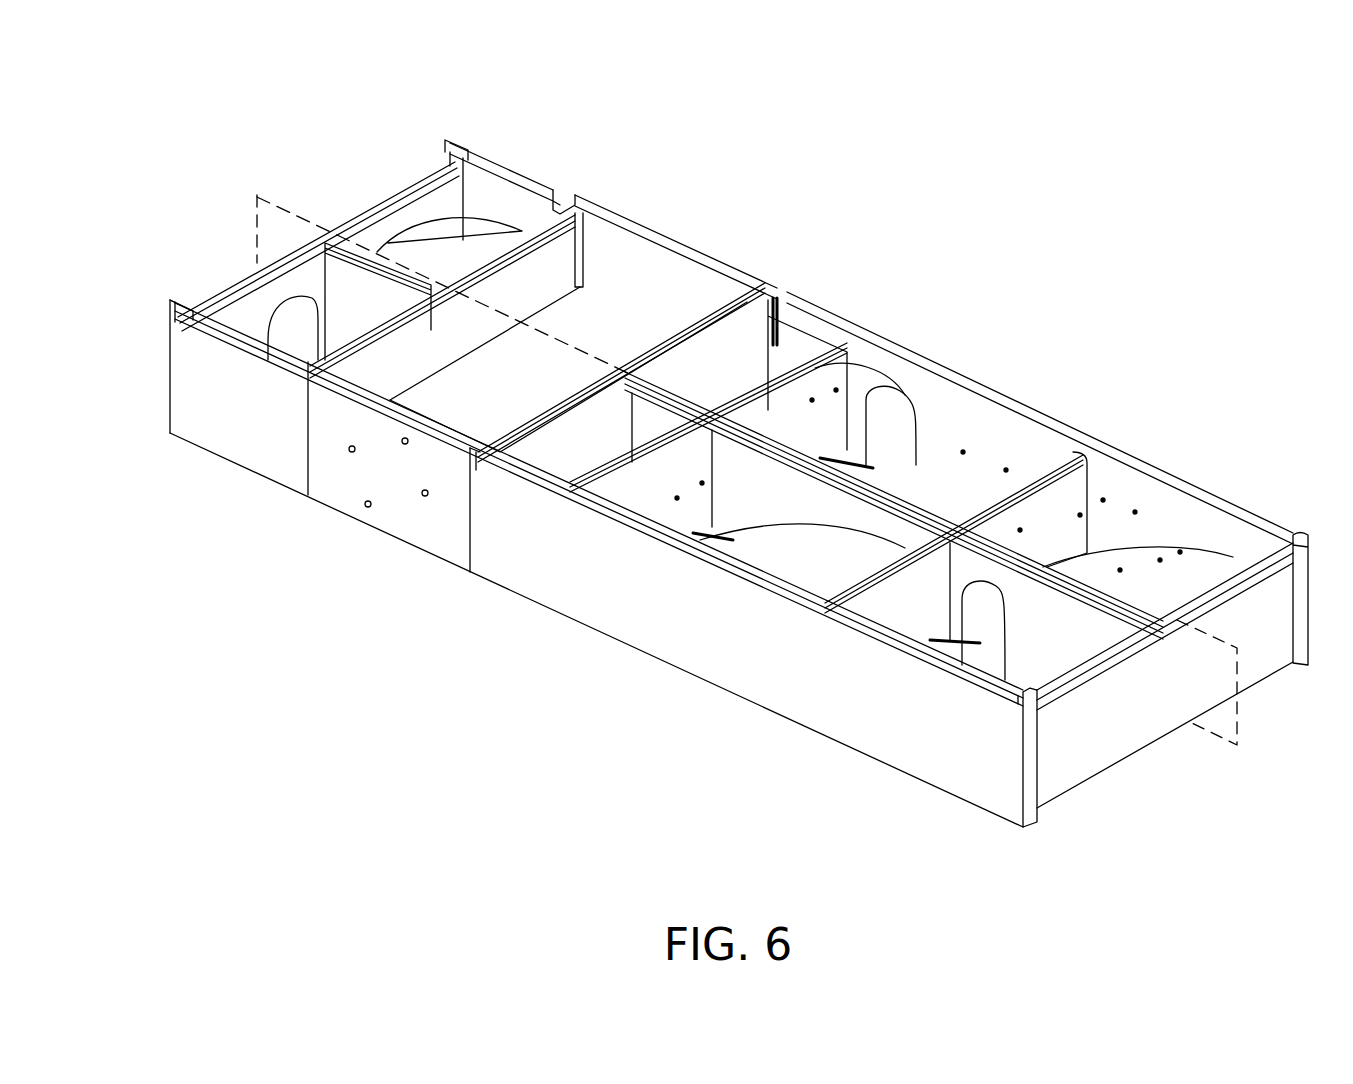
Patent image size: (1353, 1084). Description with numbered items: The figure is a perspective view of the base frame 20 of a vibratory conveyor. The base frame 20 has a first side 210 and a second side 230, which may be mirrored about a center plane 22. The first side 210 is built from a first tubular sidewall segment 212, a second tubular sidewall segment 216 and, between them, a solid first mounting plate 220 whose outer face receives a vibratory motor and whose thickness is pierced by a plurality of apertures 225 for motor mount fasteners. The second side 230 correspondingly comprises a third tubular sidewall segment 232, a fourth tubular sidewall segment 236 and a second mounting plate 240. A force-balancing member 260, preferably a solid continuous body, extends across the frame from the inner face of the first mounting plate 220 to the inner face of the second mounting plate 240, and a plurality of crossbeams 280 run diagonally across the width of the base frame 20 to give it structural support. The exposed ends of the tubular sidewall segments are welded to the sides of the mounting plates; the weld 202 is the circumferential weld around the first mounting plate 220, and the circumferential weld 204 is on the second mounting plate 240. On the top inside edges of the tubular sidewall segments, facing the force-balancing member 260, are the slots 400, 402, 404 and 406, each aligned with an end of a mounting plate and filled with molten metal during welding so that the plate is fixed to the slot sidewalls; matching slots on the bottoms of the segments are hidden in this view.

The base frame 20 is at (1035, 128).
The center plane 22 is at (1202, 733).
The weld 202 is at (302, 442).
The circumferential weld 204 is at (590, 240).
The first side 210 is at (550, 757).
The first tubular sidewall segment 212 is at (223, 424).
The second tubular sidewall segment 216 is at (510, 540).
The first mounting plate 220 is at (449, 540).
The apertures 225 is at (422, 496).
The second side 230 is at (968, 310).
The third tubular sidewall segment 232 is at (490, 148).
The fourth tubular sidewall segment 236 is at (872, 345).
The second mounting plate 240 is at (632, 225).
The force-balancing member 260 is at (652, 278).
The crossbeams 280 is at (500, 233).
The slot 400 is at (290, 352).
The slot 402 is at (478, 487).
The slot 404 is at (553, 192).
The slot 406 is at (777, 301).